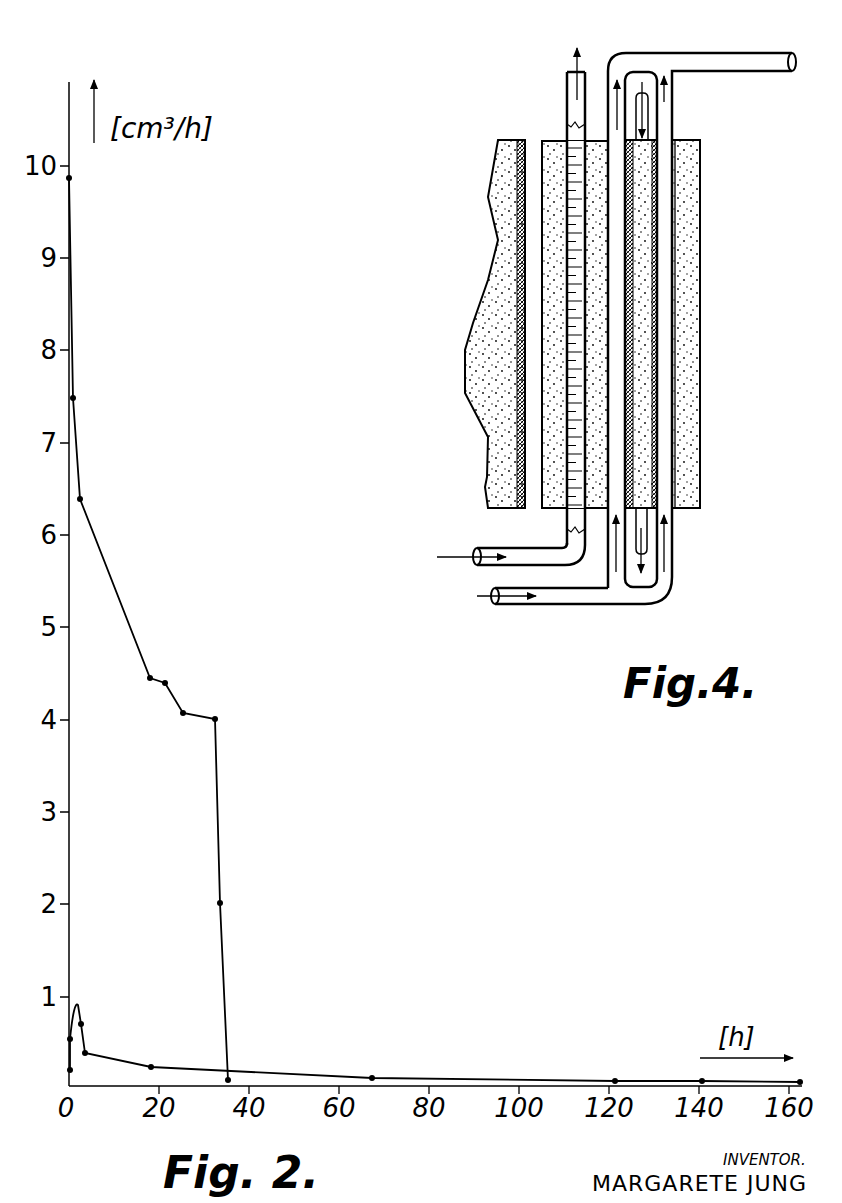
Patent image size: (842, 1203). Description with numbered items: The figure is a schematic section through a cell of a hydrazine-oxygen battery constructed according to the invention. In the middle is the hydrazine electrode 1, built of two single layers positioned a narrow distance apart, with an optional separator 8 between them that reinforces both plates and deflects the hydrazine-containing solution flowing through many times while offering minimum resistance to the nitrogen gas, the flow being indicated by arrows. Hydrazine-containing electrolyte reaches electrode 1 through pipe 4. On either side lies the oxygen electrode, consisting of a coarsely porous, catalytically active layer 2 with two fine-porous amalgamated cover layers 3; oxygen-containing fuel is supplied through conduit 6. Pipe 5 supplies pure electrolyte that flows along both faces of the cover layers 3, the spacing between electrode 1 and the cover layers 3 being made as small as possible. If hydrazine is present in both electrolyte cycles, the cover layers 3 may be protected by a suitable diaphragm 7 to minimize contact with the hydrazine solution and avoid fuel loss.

In FIG. 4, the electrode 1 is at (595, 178).
In FIG. 4, the coarsely porous catalytically active layer 2 is at (490, 337).
In FIG. 4, the fine-porous amalgamated cover layers 3 is at (520, 197).
In FIG. 2, the fine-porous amalgamated cover layers 3 is at (110, 575).
In FIG. 4, the pipe 4 is at (525, 548).
In FIG. 2, the pipe 4 is at (125, 1060).
In FIG. 4, the pipe 5 is at (550, 598).
In FIG. 4, the conduit 6 is at (647, 133).
In FIG. 4, the diaphragm 7 is at (665, 215).
In FIG. 4, the separator 8 is at (570, 263).